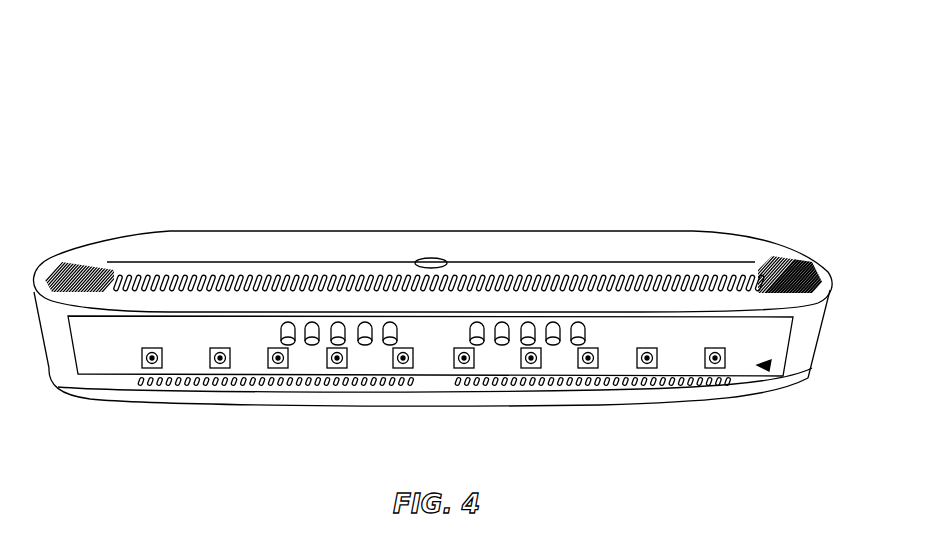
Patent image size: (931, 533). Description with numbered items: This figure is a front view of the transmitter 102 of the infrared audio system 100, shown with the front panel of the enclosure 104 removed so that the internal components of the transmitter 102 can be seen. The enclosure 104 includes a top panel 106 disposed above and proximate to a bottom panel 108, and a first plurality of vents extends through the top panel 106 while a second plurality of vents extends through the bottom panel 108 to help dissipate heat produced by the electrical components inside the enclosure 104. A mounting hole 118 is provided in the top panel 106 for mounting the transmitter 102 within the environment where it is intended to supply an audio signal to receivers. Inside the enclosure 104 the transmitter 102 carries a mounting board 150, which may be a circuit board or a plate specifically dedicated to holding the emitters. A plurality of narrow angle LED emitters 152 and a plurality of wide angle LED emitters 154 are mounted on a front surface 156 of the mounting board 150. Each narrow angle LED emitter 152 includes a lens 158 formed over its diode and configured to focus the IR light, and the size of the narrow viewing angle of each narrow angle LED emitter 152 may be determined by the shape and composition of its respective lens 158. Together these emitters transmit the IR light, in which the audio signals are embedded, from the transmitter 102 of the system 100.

The infrared audio system 100 is at (384, 104).
The infrared transmitter 102 is at (629, 250).
The enclosure 104 is at (817, 285).
The top panel 106 is at (70, 257).
The bottom panel 108 is at (730, 393).
The mounting hole 118 is at (432, 258).
The mounting board 150 is at (780, 333).
The narrow angle LED emitters 152 is at (312, 320).
The wide angle LED emitters 154 is at (220, 368).
The front surface 156 is at (766, 366).
The lens 158 is at (390, 320).